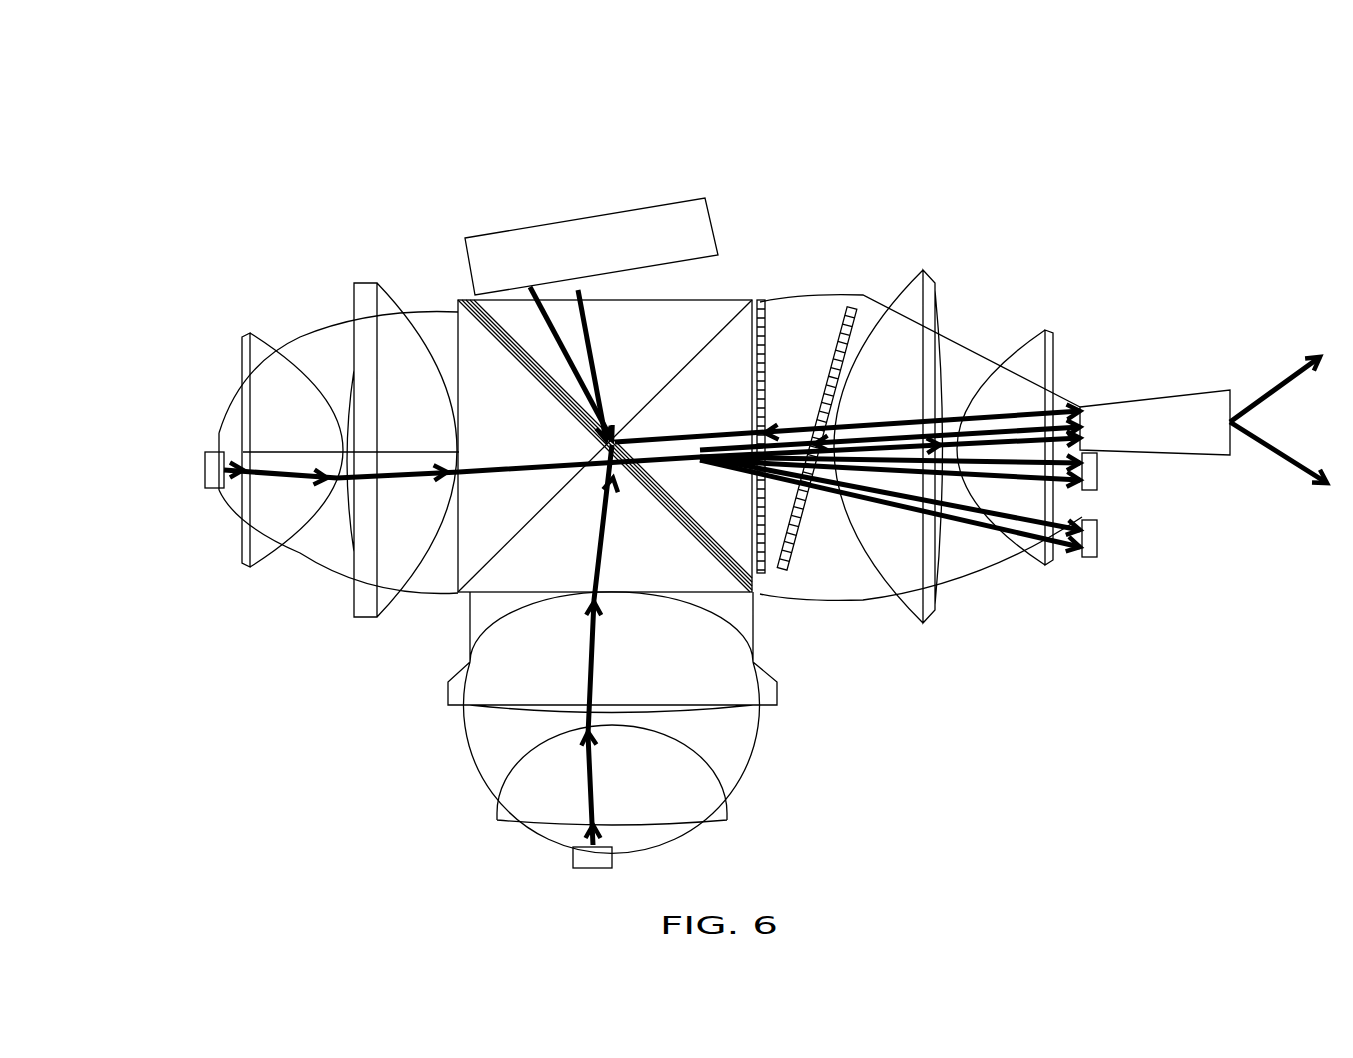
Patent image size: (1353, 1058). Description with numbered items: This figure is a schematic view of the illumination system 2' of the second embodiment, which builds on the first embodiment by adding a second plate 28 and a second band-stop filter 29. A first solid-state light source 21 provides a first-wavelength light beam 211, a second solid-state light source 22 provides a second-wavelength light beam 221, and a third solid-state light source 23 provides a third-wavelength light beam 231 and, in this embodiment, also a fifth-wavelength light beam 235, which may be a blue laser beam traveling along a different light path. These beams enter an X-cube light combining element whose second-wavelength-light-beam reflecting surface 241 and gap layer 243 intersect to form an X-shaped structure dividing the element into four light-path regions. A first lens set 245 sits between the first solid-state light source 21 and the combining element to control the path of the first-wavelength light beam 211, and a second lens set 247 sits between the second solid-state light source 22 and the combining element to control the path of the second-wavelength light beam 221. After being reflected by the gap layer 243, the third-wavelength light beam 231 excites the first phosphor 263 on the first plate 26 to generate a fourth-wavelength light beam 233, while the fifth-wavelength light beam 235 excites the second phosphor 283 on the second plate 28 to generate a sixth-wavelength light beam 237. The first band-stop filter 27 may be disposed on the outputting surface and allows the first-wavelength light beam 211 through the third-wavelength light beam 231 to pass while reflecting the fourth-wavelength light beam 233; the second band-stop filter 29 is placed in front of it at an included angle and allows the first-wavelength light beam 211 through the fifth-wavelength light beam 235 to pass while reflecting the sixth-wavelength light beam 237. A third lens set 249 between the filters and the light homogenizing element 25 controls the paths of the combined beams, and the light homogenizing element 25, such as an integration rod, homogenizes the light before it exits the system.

The illumination system 2' is at (766, 464).
The first solid-state light source 21 is at (213, 489).
The first-wavelength light beam 211 is at (293, 480).
The second solid-state light source 22 is at (597, 858).
The second-wavelength light beam 221 is at (597, 788).
The third solid-state light source 23 is at (572, 233).
The third-wavelength light beam 231 is at (596, 348).
The fourth-wavelength light beam 233 is at (1060, 455).
The fifth-wavelength light beam 235 is at (530, 297).
The sixth-wavelength light beam 237 is at (1013, 507).
The second-wavelength-light-beam reflecting surface 241 is at (720, 327).
The gap layer 243 is at (470, 327).
The first lens set 245 is at (265, 362).
The second lens set 247 is at (767, 697).
The third lens set 249 is at (1038, 340).
The light homogenizing element 25 is at (1193, 410).
The first plate 26 is at (1100, 481).
The first phosphor 263 is at (1073, 481).
The first band-stop filter 27 is at (762, 313).
The second plate 28 is at (1098, 553).
The second phosphor 283 is at (1077, 551).
The second band-stop filter 29 is at (847, 308).